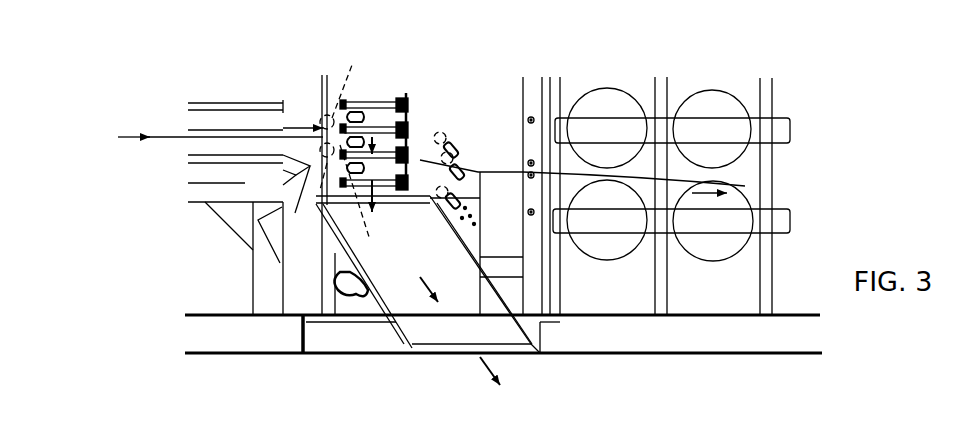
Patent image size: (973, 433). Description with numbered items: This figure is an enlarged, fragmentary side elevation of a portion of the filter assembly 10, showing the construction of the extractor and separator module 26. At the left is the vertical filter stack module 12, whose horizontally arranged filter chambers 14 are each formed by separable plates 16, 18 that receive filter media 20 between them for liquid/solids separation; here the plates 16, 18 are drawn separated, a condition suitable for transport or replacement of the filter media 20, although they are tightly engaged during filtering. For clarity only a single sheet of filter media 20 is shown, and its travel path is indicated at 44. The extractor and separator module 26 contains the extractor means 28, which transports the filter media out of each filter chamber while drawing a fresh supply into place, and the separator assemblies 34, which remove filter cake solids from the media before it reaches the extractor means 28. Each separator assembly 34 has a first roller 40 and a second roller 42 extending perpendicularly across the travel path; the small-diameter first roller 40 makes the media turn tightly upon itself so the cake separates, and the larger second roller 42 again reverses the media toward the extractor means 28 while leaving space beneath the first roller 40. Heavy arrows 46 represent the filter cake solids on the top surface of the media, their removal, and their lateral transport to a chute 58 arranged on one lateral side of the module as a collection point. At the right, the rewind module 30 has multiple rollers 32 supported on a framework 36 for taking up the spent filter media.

The filter assembly 10 is at (887, 132).
The vertical filter stack module 12 is at (207, 74).
The filter chambers 14 is at (188, 162).
The separable plate 16 is at (303, 209).
The separable plate 18 is at (289, 247).
The filter media 20 is at (505, 167).
The extractor and separator module 26 is at (455, 63).
The extractor means 28 is at (450, 178).
The rewind module 30 is at (750, 53).
The rollers 32 is at (700, 97).
The separator assemblies 34 is at (407, 150).
The framework 36 is at (802, 193).
The first roller 40 is at (352, 132).
The second roller 42 is at (360, 155).
The filter media travel path 44 is at (220, 103).
The heavy arrows 46 is at (303, 126).
The chute 58 is at (455, 338).